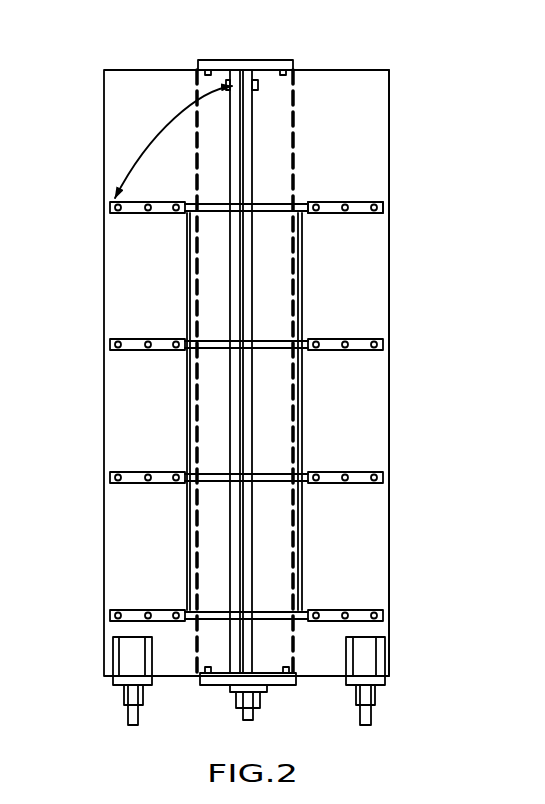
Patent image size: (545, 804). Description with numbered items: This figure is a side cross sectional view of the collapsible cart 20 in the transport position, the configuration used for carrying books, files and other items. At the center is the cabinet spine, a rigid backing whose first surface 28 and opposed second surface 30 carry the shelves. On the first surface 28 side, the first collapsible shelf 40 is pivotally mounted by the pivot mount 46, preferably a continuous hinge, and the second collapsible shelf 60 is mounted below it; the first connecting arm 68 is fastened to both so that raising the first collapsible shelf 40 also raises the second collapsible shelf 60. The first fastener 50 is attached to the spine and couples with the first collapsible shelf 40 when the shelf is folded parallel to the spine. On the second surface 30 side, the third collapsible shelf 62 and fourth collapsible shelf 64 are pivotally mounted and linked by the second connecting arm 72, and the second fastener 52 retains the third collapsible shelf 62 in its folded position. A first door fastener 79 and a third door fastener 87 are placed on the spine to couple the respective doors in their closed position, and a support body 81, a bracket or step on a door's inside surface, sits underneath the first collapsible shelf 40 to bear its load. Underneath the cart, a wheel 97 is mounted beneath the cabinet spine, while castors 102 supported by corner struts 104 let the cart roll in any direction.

The collapsible cart 20 is at (465, 390).
The first surface 28 is at (243, 640).
The second surface 30 is at (285, 140).
The first collapsible shelf 40 is at (110, 207).
The pivot mount 46 is at (316, 471).
The first fastener 50 is at (230, 78).
The second fastener 52 is at (262, 82).
The second collapsible shelf 60 is at (110, 340).
The third collapsible shelf 62 is at (383, 207).
The fourth collapsible shelf 64 is at (383, 344).
The first connecting arm 68 is at (183, 253).
The second connecting arm 72 is at (315, 253).
The first door fastener 79 is at (193, 77).
The support body 81 is at (372, 195).
The third door fastener 87 is at (303, 77).
The wheel 97 is at (262, 700).
The castors 102 is at (125, 698).
The corner struts 104 is at (130, 655).